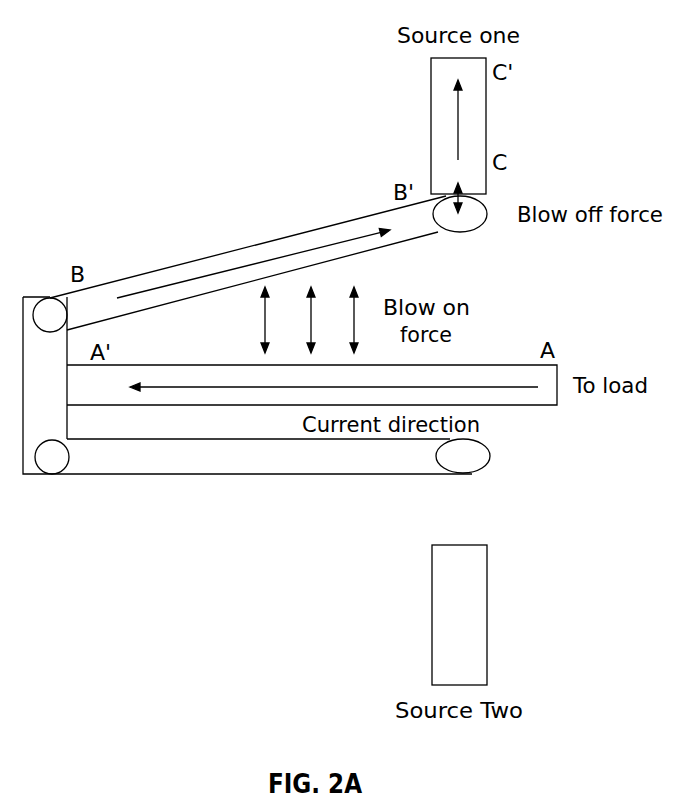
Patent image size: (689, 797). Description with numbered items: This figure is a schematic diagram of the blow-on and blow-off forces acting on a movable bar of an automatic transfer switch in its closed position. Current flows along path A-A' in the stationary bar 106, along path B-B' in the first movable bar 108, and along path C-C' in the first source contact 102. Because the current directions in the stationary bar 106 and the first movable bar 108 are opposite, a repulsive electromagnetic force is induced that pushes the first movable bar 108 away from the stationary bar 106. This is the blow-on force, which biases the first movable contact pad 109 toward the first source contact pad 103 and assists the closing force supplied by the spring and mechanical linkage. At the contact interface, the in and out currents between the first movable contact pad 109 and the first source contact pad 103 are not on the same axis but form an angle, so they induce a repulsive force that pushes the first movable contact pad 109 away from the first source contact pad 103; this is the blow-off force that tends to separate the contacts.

The first source contact 102 is at (486, 113).
The first source contact pad 103 is at (486, 190).
The stationary bar 106 is at (558, 372).
The first movable bar 108 is at (253, 248).
The first movable contact pad 109 is at (460, 232).